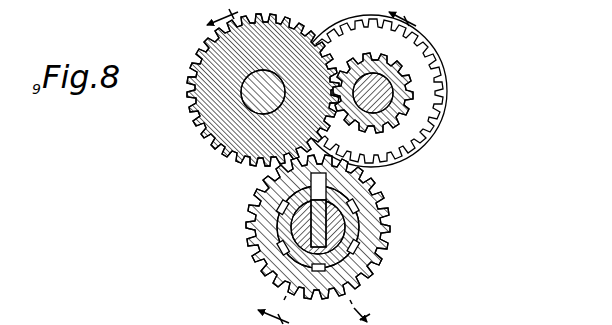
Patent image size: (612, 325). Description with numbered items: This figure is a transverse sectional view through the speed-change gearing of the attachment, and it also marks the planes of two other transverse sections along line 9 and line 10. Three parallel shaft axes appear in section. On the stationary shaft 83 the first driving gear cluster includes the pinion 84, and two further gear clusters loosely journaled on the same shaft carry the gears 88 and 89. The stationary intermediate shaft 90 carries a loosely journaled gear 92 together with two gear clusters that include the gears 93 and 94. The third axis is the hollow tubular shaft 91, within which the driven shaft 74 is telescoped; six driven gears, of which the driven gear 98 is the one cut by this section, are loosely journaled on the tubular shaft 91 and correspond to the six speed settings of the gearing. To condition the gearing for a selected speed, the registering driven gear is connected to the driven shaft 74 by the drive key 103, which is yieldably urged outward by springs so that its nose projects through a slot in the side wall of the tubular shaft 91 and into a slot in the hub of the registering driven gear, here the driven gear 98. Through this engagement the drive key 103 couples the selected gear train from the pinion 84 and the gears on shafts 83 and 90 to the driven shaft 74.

The line 9— 9 is at (390, 168).
The line 10— 10 is at (236, 166).
The driven shaft 74 is at (289, 224).
The stationary shaft 83 is at (373, 94).
The pinion 84 is at (381, 50).
The gear 88 is at (438, 119).
The gear 89 is at (157, 322).
The stationary intermediate shaft 90 is at (263, 97).
The hollow tubular shaft 91 is at (256, 240).
The gear 92 is at (234, 322).
The gear 93 is at (325, 322).
The gear 94 is at (223, 150).
The driven gear 98 is at (386, 235).
The drive key 103 is at (311, 177).